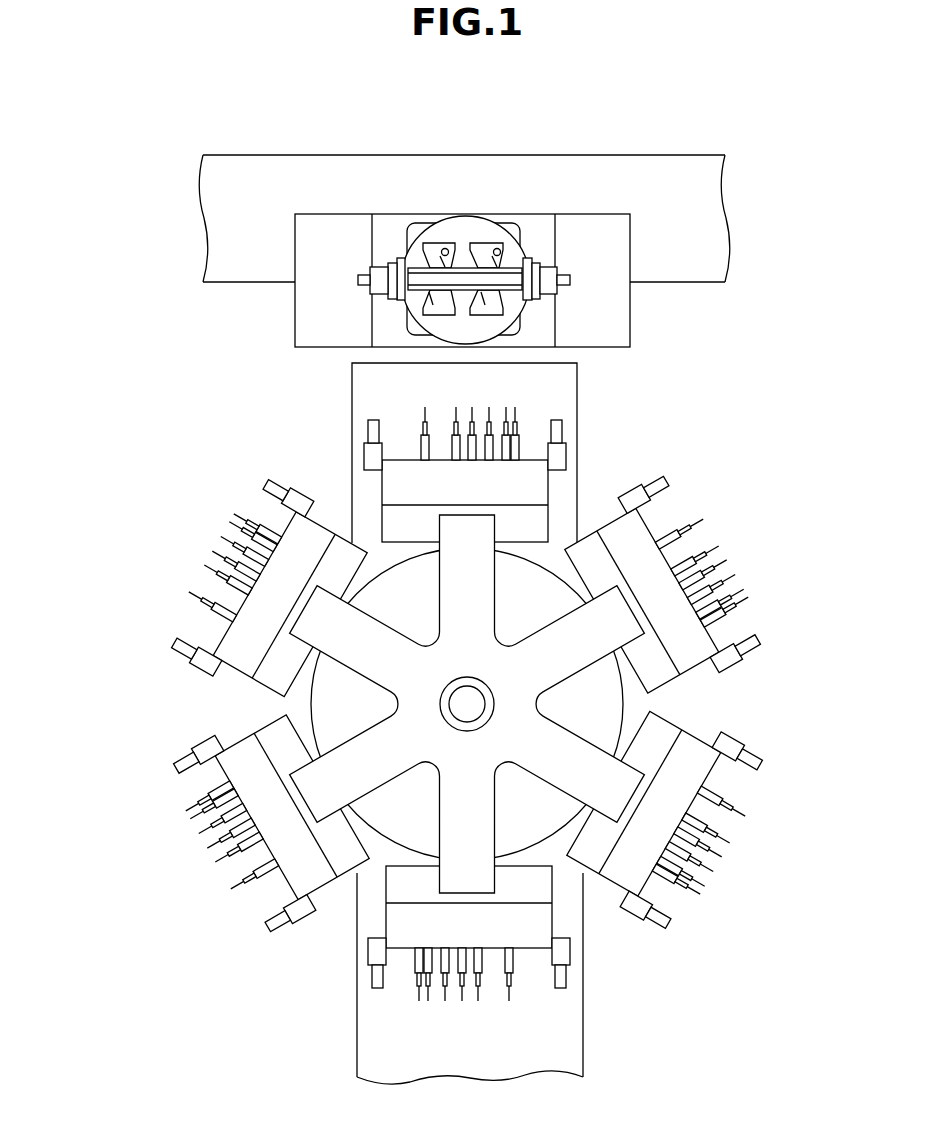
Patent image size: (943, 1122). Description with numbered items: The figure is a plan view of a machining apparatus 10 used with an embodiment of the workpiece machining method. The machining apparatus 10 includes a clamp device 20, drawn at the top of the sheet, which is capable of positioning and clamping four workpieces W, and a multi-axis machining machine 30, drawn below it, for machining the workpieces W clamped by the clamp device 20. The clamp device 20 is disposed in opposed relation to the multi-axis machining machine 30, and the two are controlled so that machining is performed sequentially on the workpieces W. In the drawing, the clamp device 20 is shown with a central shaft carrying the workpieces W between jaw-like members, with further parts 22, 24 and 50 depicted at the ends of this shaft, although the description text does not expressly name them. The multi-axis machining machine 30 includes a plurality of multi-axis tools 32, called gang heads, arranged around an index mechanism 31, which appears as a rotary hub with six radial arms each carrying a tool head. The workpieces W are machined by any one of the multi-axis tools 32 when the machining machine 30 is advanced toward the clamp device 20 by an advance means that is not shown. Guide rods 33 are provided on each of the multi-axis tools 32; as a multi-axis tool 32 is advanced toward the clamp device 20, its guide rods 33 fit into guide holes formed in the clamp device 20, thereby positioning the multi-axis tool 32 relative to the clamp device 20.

The machining apparatus 10 is at (178, 110).
The clamp device 20 is at (495, 212).
The left drive unit 22 is at (372, 299).
The right drive unit 24 is at (560, 268).
The clamp shaft 50 is at (514, 268).
The workpiece W is at (492, 243).
The multi-axis machining machine 30 is at (459, 714).
The index mechanism 31 is at (352, 721).
The multi-axis tool 32 is at (407, 460).
The guide rod 33 is at (367, 433).